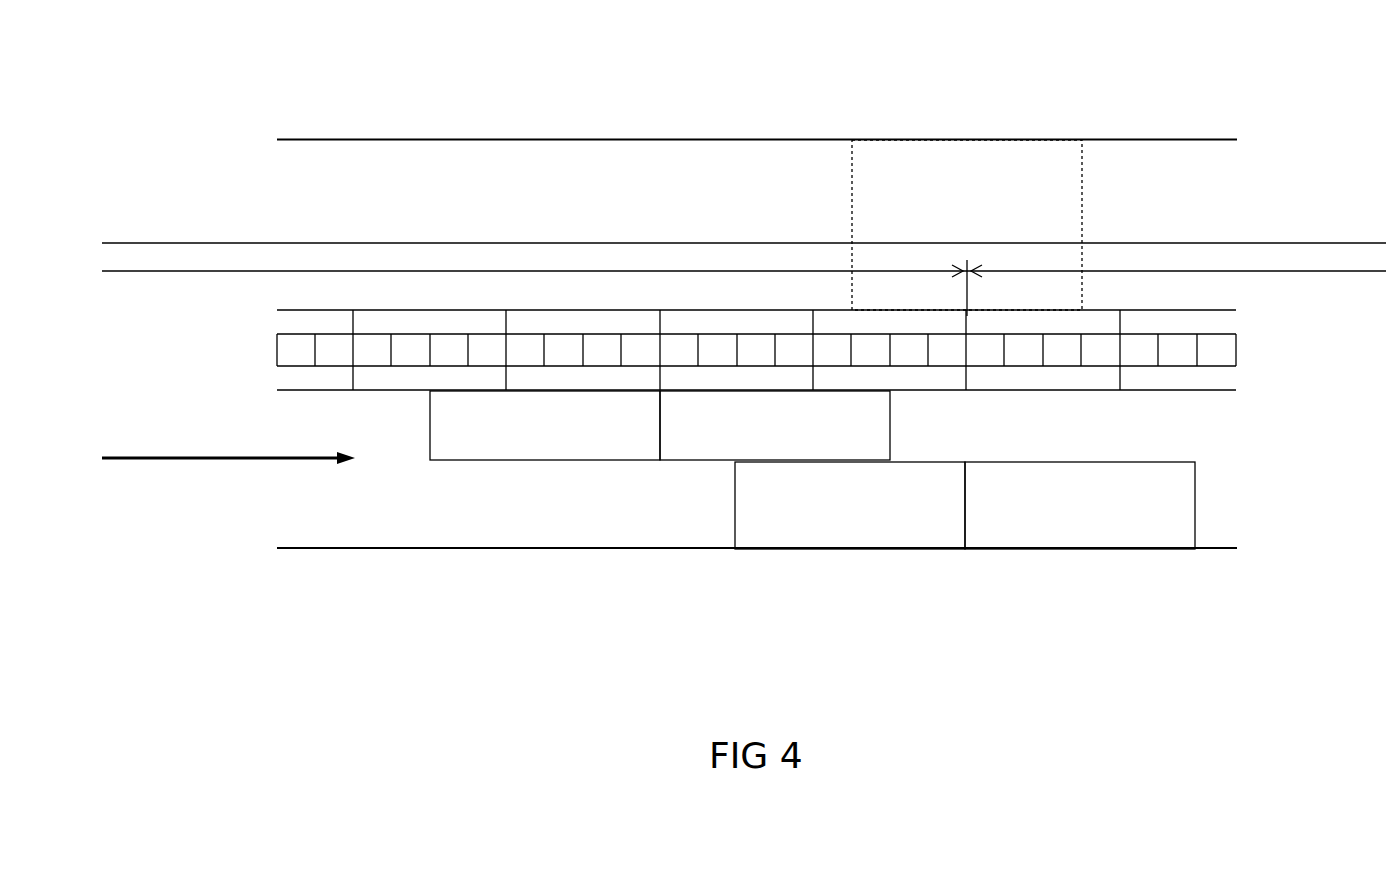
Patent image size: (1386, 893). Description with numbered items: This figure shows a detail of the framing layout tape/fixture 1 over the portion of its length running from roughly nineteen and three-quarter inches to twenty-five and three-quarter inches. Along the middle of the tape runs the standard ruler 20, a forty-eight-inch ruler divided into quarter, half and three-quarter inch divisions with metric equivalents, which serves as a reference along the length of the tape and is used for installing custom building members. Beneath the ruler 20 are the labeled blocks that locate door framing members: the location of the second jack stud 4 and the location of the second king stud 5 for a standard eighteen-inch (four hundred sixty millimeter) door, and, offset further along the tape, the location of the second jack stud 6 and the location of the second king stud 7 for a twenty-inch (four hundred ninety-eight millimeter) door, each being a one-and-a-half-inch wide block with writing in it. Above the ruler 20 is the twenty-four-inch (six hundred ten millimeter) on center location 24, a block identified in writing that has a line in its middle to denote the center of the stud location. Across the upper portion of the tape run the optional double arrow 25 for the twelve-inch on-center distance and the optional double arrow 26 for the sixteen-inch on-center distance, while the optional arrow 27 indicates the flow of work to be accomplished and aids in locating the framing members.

The framing layout tape/fixture 1 is at (482, 136).
The location of the 2nd jack stud for 18" door 4 is at (518, 462).
The location of the 2nd king stud for 18" door 5 is at (713, 462).
The location of the 2nd jack stud for 20" door 6 is at (840, 551).
The location of the 2nd king stud for 20" door 7 is at (1058, 551).
The standard ruler 20 is at (497, 355).
The 24" on center location 24 is at (992, 141).
The double arrow indicating the distance between the 12" on center location 25 is at (546, 272).
The double arrow indicating the distance between the 16" on center location 26 is at (680, 246).
The arrow indicating the flow of work 27 is at (332, 472).